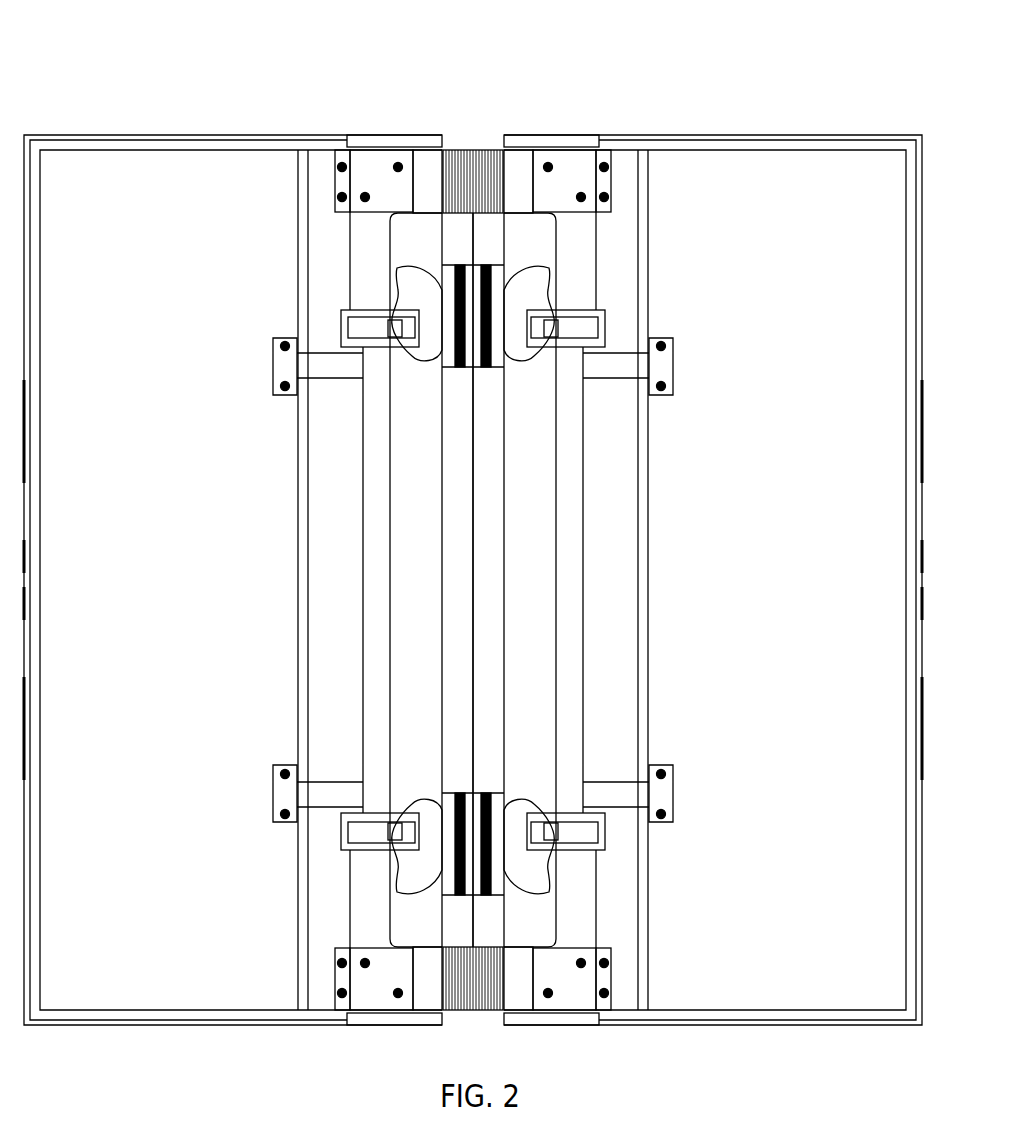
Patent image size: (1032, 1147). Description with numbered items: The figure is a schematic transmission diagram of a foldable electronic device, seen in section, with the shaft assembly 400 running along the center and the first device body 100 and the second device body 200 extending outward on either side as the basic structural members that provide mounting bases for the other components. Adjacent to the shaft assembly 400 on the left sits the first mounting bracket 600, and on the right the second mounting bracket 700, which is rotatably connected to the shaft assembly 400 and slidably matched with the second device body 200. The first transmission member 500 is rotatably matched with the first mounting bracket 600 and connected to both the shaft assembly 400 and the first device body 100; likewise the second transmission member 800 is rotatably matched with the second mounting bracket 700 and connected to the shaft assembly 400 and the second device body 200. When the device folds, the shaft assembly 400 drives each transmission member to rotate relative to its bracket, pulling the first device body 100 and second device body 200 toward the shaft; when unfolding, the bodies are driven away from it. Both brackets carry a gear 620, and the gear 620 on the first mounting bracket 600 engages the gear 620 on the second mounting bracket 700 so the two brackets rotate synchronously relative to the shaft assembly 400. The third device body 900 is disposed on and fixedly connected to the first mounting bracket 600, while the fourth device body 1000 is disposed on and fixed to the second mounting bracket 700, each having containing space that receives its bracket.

The first device body 100 is at (185, 175).
The second device body 200 is at (763, 138).
The shaft assembly 400 is at (450, 537).
The first transmission member 500 is at (397, 266).
The first mounting bracket 600 is at (363, 228).
The gear 620 is at (477, 128).
The second mounting bracket 700 is at (583, 245).
The second transmission member 800 is at (543, 280).
The third device body 900 is at (368, 135).
The fourth device body 1000 is at (573, 137).